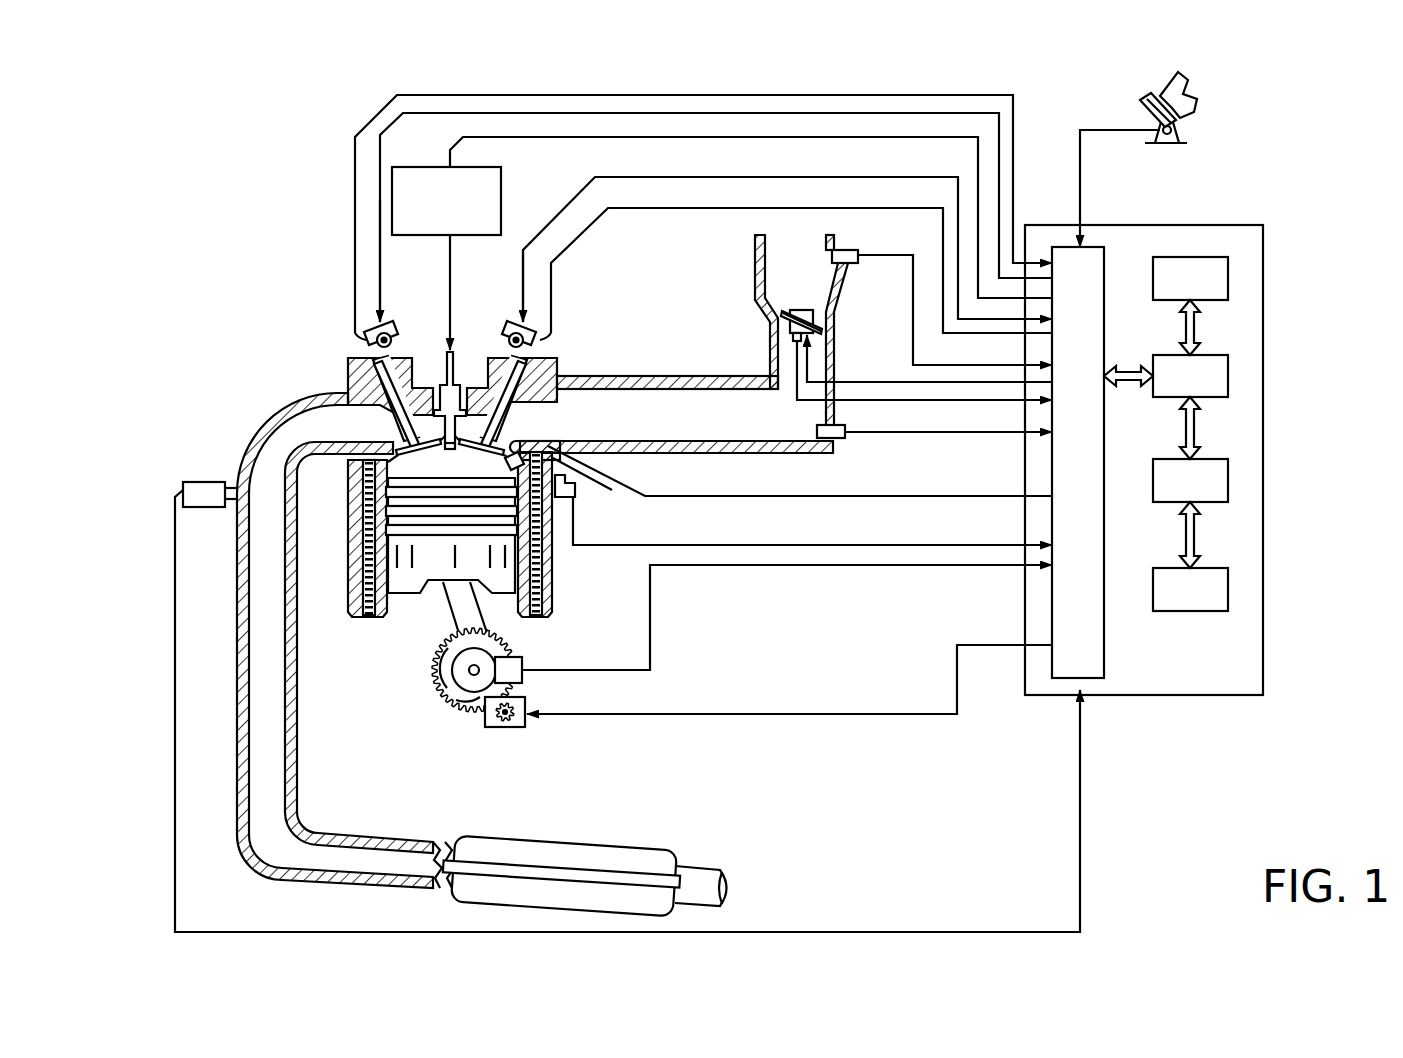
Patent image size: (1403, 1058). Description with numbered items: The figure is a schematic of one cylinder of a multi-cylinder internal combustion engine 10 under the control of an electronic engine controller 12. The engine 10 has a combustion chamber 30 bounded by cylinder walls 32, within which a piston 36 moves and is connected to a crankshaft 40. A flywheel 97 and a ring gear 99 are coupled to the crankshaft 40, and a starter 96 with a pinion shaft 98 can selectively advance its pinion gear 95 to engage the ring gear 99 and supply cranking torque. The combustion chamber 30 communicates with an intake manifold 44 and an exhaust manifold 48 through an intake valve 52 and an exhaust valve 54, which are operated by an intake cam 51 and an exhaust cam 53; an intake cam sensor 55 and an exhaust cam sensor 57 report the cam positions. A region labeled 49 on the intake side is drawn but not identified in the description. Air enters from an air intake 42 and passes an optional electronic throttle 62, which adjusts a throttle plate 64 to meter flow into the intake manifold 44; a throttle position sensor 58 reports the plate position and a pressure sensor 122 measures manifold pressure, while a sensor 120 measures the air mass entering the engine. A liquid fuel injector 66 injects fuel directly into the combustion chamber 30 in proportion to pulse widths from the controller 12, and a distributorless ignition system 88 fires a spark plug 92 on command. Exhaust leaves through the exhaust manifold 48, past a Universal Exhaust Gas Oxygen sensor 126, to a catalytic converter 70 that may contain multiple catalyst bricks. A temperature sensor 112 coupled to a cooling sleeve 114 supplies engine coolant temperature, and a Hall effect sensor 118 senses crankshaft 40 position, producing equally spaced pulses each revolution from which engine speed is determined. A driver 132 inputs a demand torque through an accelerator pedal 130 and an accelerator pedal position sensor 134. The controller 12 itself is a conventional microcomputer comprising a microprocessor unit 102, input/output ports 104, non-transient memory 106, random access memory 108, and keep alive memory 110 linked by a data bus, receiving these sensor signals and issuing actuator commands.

The internal combustion engine 10 is at (283, 312).
The electronic engine controller 12 is at (1245, 225).
The combustion chamber 30 is at (375, 567).
The cylinder walls 32 is at (382, 610).
The piston 36 is at (435, 592).
The crankshaft 40 is at (452, 698).
The air intake 42 is at (784, 283).
The intake manifold 44 is at (720, 426).
The exhaust manifold 48 is at (303, 434).
The intake port 49 is at (540, 430).
The intake cam 51 is at (510, 325).
The intake valve 52 is at (508, 398).
The exhaust cam 53 is at (396, 322).
The exhaust valve 54 is at (380, 398).
The intake cam sensor 55 is at (536, 345).
The exhaust cam sensor 57 is at (366, 345).
The throttle position sensor 58 is at (795, 340).
The electronic throttle 62 is at (815, 318).
The throttle plate 64 is at (790, 320).
The liquid fuel injector 66 is at (778, 482).
The catalytic converter 70 is at (467, 838).
The distributorless ignition system 88 is at (408, 167).
The spark plug 92 is at (440, 382).
The pinion gear 95 is at (515, 728).
The starter 96 is at (525, 720).
The flywheel 97 is at (438, 682).
The pinion shaft 98 is at (500, 722).
The ring gear 99 is at (468, 710).
The microprocessor unit 102 is at (1228, 376).
The input/output ports 104 is at (1104, 253).
The non-transient memory 106 is at (1228, 275).
The random access memory 108 is at (1228, 481).
The keep alive memory 110 is at (1228, 590).
The temperature sensor 112 is at (565, 497).
The cooling sleeve 114 is at (548, 575).
The Hall effect sensor 118 is at (522, 662).
The air mass sensor 120 is at (845, 266).
The pressure sensor 122 is at (840, 440).
The Universal Exhaust Gas Oxygen sensor 126 is at (183, 486).
The accelerator pedal 130 is at (1140, 108).
The driver 132 is at (1197, 94).
The accelerator pedal position sensor 134 is at (1185, 133).